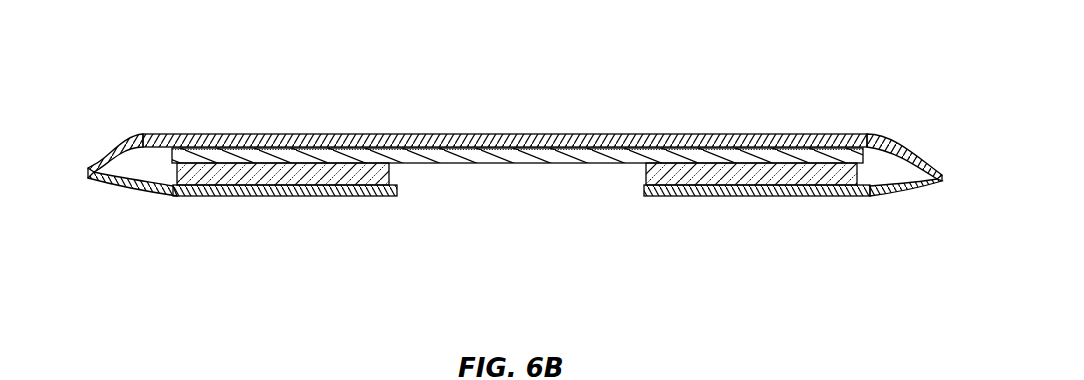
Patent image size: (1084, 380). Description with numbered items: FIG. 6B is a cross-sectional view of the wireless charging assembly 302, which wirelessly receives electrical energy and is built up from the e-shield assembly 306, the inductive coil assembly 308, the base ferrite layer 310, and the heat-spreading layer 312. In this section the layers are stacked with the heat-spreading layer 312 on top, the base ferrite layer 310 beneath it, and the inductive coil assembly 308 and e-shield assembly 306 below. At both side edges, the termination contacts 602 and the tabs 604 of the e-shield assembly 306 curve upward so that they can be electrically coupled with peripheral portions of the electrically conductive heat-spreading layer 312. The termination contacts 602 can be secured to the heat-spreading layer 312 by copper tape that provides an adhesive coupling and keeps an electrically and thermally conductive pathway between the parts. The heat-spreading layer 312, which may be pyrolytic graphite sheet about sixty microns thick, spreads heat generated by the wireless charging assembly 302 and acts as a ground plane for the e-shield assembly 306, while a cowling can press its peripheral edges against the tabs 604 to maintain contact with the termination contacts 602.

The wireless charging assembly 302 is at (158, 86).
The e-shield assembly 306 is at (288, 195).
The inductive coil assembly 308 is at (390, 173).
The base ferrite layer 310 is at (366, 152).
The heat-spreading layer 312 is at (480, 135).
The termination contacts 602 is at (90, 167).
The tabs 604 is at (142, 188).